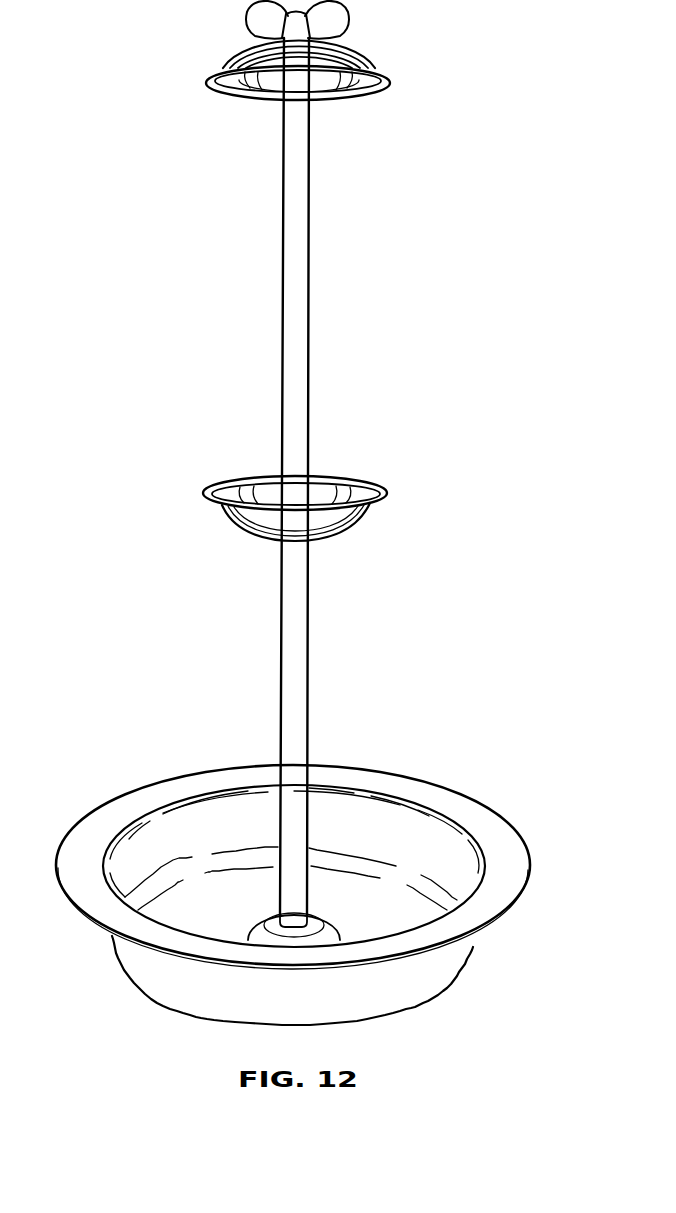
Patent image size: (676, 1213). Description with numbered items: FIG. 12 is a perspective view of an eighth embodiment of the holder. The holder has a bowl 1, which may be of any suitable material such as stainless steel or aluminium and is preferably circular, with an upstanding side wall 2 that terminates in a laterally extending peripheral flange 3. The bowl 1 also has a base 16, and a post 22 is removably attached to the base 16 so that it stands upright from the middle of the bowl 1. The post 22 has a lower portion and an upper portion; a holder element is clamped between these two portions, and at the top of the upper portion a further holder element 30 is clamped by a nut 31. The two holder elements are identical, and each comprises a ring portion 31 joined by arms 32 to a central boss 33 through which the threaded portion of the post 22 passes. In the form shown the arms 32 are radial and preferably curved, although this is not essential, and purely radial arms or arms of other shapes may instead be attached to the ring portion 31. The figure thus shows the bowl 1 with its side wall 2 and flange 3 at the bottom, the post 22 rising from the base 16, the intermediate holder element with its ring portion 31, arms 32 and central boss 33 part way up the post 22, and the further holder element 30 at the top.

The bowl 1 is at (478, 942).
The side wall 2 is at (437, 977).
The peripheral flange 3 is at (523, 867).
The base 16 is at (223, 917).
The post 22 is at (326, 291).
The holder element 30 is at (387, 78).
The ring portion 31 is at (385, 495).
The arms 32 is at (348, 525).
The central boss 33 is at (297, 522).